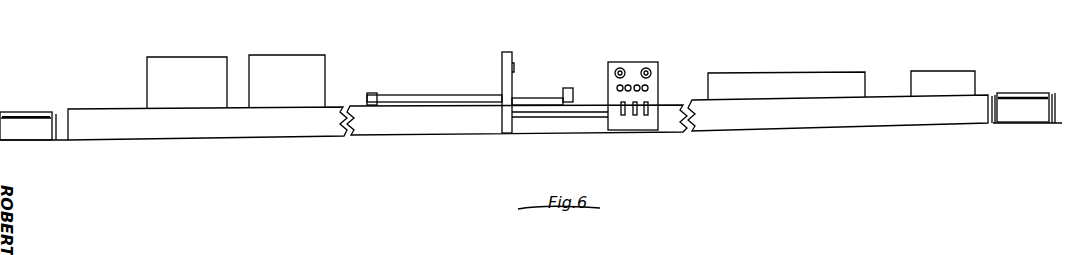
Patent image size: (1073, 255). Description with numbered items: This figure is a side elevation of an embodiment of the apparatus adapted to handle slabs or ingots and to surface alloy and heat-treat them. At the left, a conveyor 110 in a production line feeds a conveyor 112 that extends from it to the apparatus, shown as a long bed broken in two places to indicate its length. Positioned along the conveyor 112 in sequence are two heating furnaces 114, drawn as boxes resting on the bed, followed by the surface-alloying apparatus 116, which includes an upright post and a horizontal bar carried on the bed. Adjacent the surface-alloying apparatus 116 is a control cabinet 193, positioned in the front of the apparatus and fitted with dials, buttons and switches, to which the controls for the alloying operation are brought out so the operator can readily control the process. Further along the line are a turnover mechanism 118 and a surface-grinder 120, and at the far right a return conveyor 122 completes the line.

The conveyor 110 is at (26, 113).
The conveyor 112 is at (342, 103).
The heating furnaces 114 is at (184, 63).
The surface-alloying apparatus 116 is at (507, 83).
The turnover mechanism 118 is at (775, 78).
The surface-grinder 120 is at (933, 77).
The return conveyor 122 is at (1018, 92).
The control cabinet 193 is at (632, 62).